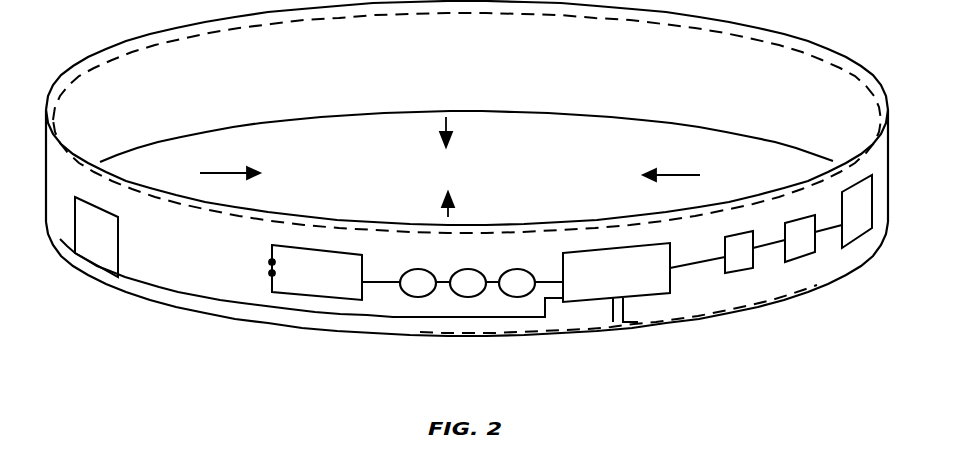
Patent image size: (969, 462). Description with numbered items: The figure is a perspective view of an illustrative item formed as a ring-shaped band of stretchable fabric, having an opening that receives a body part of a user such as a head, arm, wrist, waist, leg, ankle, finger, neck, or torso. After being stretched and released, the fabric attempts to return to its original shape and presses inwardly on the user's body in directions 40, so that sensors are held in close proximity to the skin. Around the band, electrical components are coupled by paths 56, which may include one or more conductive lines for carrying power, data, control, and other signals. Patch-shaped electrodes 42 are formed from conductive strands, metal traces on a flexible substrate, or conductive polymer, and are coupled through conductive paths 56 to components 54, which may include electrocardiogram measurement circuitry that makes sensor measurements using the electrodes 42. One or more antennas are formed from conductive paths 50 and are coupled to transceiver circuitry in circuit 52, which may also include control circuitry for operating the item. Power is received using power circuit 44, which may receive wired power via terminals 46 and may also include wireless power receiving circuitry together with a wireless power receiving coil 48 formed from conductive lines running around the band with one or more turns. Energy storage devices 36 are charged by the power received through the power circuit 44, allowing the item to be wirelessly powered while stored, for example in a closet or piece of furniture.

The energy storage devices 36 is at (418, 297).
The directions 40 is at (222, 173).
The electrodes 42 is at (98, 263).
The power circuit 44 is at (340, 292).
The terminals 46 is at (273, 273).
The coil 48 is at (283, 218).
The conductive paths 50 is at (647, 320).
The circuit 52 is at (577, 297).
The components 54 is at (740, 270).
The paths 56 is at (172, 288).